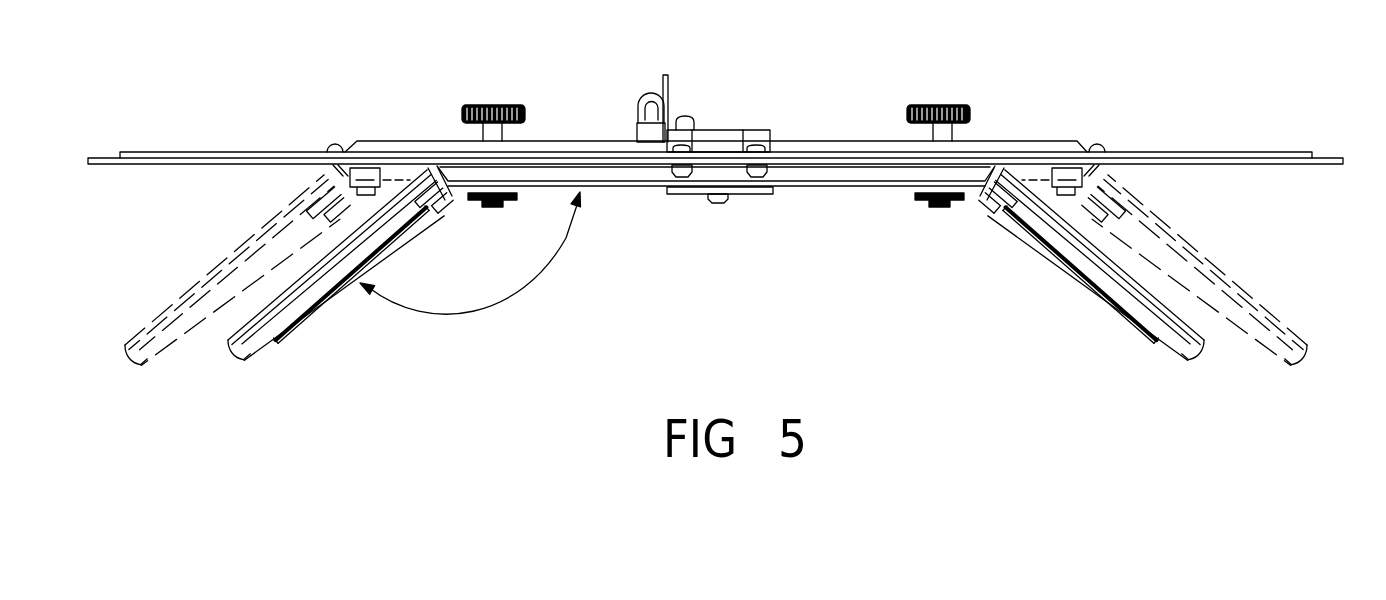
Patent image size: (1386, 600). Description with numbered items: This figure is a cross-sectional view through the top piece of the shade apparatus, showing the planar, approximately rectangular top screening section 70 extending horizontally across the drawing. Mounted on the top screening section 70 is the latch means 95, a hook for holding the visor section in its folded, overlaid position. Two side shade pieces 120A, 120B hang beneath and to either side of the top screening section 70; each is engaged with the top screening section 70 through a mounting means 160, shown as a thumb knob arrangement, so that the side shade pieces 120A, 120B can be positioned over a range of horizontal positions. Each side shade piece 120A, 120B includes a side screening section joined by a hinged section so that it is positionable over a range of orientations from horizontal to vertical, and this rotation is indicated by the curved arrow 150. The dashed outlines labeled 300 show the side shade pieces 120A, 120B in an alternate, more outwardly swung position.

The top screening section 70 is at (568, 141).
The latch means 95 is at (672, 95).
The side shade piece 120A is at (358, 350).
The side shade piece 120B is at (1050, 312).
The pivot rotation 150 is at (533, 282).
The mounting means 160 is at (490, 104).
The alternate arm position 300 is at (1290, 285).